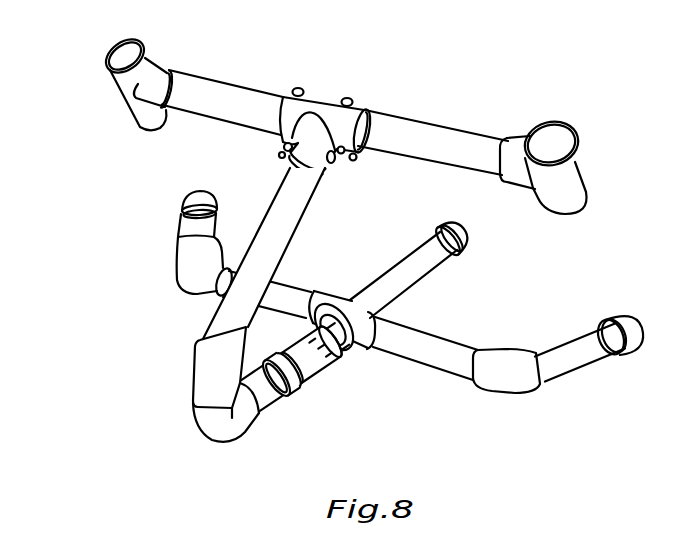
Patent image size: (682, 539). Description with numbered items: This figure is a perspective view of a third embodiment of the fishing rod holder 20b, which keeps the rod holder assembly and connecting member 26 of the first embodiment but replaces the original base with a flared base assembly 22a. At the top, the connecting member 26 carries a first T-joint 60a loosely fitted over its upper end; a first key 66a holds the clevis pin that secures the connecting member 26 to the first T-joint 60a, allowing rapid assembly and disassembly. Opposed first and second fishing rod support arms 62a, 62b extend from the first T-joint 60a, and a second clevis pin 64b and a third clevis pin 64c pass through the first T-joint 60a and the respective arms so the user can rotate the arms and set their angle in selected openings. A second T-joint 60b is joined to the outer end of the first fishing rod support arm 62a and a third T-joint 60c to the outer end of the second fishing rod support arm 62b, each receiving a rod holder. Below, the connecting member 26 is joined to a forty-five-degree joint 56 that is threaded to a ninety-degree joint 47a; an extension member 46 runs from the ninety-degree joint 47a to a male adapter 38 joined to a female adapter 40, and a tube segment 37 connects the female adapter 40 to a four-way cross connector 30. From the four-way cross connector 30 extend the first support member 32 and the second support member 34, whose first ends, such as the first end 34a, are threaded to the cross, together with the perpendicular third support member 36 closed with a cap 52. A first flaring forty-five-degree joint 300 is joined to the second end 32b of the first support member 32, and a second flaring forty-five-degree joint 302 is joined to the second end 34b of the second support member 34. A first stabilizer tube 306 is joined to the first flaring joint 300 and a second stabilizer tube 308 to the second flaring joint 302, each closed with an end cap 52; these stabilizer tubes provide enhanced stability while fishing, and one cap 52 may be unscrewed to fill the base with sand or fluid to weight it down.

The fishing rod holder 20b is at (68, 106).
The flared base assembly 22a is at (505, 292).
The connecting member 26 is at (274, 232).
The four-way cross connector 30 is at (385, 305).
The first support member 32 is at (455, 347).
The second end of first support member 32b is at (474, 374).
The second support member 34 is at (290, 290).
The first end of second support member 34a is at (332, 294).
The second end of second support member 34b is at (222, 297).
The third support member 36 is at (411, 262).
The tube segment 37 is at (336, 350).
The male adapter 38 is at (311, 392).
The female adapter 40 is at (327, 380).
The extension member 46 is at (262, 405).
The 90-degree joint 47a is at (212, 432).
The cap 52 is at (190, 200).
The 45-degree joint 56 is at (200, 372).
The first T-joint 60a is at (325, 98).
The second T-joint 60b is at (140, 110).
The third T-joint 60c is at (584, 166).
The first fishing rod support arm 62a is at (205, 85).
The second fishing rod support arm 62b is at (432, 127).
The second clevis pin 64b is at (298, 89).
The third clevis pin 64c is at (352, 100).
The first key 66a is at (283, 153).
The first flaring 45-degree joint 300 is at (520, 389).
The second flaring 45-degree joint 302 is at (186, 268).
The first stabilizer tube 306 is at (583, 345).
The second stabilizer tube 308 is at (185, 228).